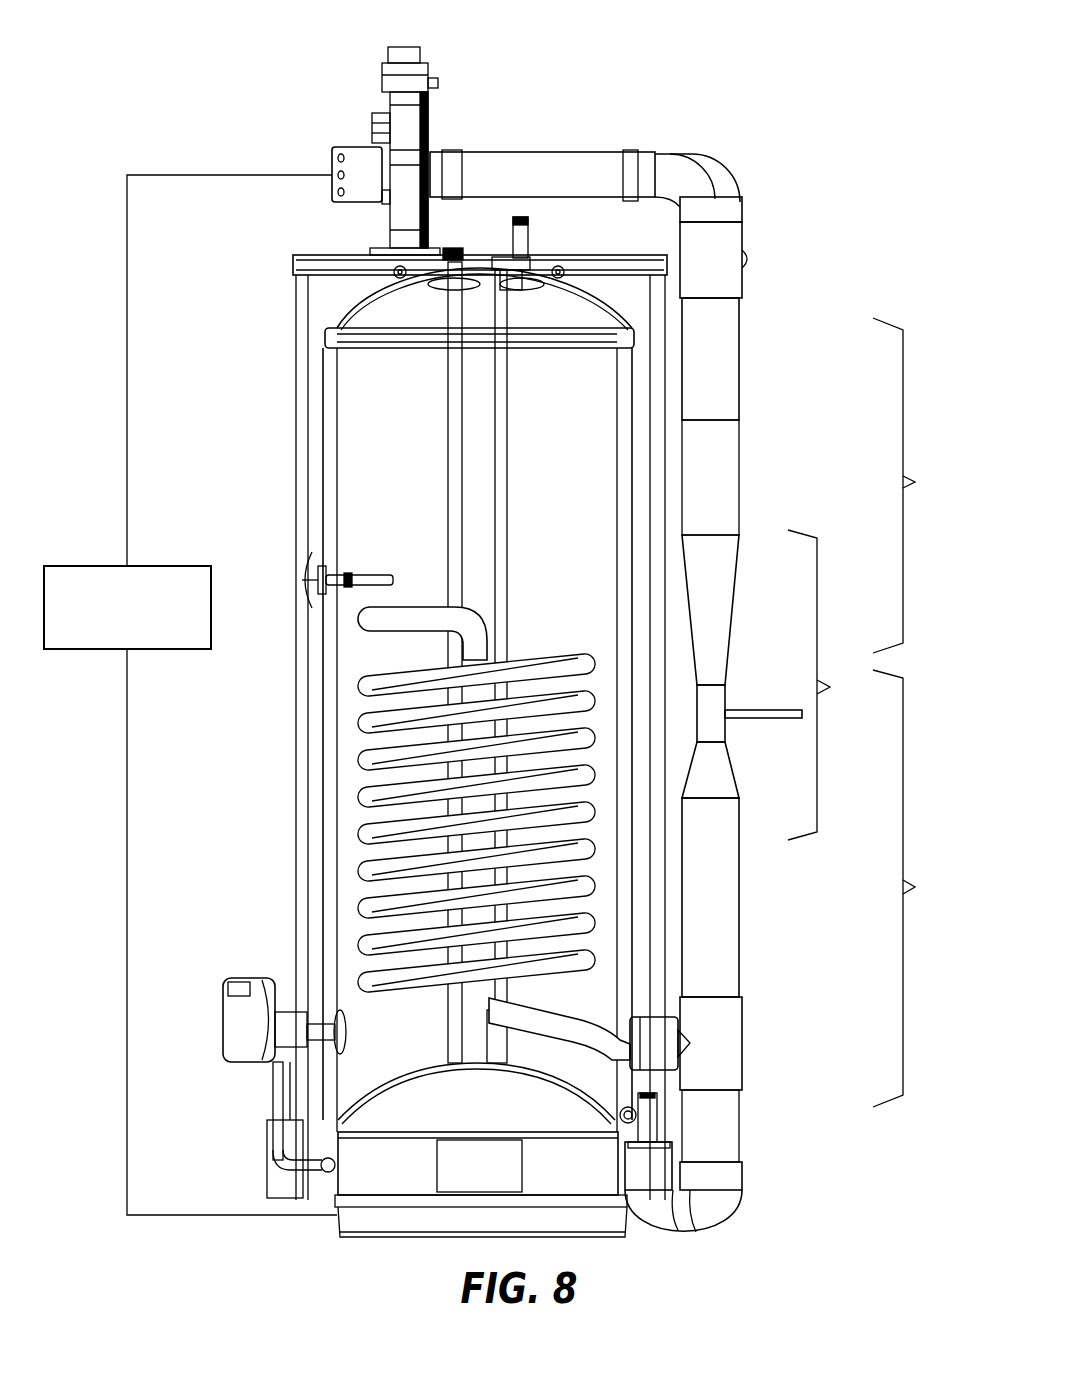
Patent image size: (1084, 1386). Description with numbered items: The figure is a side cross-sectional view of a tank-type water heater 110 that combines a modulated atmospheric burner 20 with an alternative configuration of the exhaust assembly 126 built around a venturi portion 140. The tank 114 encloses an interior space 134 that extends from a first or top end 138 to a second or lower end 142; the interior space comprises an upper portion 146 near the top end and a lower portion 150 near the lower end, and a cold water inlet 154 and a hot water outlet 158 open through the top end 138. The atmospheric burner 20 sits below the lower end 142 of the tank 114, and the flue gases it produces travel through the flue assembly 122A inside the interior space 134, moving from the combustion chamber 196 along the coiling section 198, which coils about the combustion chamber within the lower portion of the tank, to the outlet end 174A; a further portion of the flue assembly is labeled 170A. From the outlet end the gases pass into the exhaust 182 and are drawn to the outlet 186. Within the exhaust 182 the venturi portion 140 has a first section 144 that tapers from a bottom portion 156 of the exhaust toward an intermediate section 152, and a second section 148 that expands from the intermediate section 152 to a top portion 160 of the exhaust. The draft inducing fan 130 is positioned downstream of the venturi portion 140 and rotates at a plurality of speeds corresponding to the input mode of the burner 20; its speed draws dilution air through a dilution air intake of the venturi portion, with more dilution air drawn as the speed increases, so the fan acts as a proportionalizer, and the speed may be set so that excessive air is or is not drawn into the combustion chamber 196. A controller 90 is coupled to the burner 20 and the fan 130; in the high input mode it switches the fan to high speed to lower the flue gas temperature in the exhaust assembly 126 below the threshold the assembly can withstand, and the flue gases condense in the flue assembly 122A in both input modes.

The atmospheric burner 20 is at (537, 1156).
The controller 90 is at (93, 565).
The water heater 110 is at (735, 92).
The tank 114 is at (330, 508).
The flue assembly 122A is at (420, 752).
The exhaust assembly 126 is at (802, 1038).
The draft inducing fan 130 is at (357, 160).
The interior space 134 is at (421, 494).
The first end 138 is at (595, 290).
The venturi portion 140 is at (831, 685).
The second end 142 is at (605, 1098).
The first section 144 is at (713, 783).
The upper portion 146 is at (918, 485).
The second section 148 is at (712, 585).
The lower portion 150 is at (918, 888).
The intermediate section 152 is at (717, 710).
The cold water inlet 154 is at (500, 265).
The bottom portion 156 is at (727, 882).
The hot water outlet 158 is at (530, 222).
The top portion 160 is at (740, 456).
The internal pipe 170A is at (475, 1070).
The outlet end 174A is at (617, 1057).
The exhaust 182 is at (740, 388).
The outlet 186 is at (405, 52).
The combustion chamber 196 is at (607, 1152).
The coiling section 198 is at (440, 818).